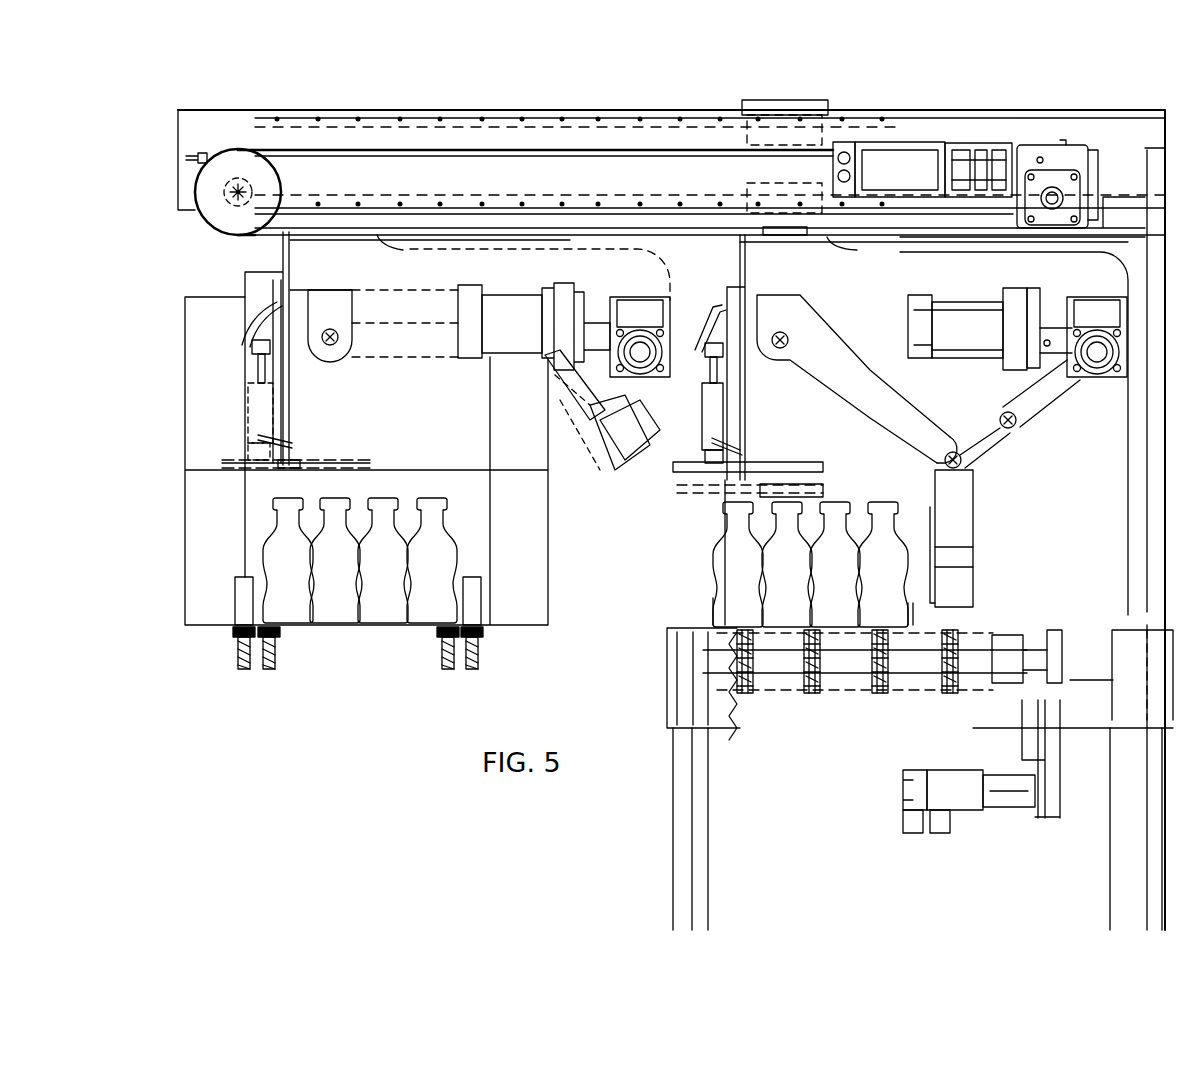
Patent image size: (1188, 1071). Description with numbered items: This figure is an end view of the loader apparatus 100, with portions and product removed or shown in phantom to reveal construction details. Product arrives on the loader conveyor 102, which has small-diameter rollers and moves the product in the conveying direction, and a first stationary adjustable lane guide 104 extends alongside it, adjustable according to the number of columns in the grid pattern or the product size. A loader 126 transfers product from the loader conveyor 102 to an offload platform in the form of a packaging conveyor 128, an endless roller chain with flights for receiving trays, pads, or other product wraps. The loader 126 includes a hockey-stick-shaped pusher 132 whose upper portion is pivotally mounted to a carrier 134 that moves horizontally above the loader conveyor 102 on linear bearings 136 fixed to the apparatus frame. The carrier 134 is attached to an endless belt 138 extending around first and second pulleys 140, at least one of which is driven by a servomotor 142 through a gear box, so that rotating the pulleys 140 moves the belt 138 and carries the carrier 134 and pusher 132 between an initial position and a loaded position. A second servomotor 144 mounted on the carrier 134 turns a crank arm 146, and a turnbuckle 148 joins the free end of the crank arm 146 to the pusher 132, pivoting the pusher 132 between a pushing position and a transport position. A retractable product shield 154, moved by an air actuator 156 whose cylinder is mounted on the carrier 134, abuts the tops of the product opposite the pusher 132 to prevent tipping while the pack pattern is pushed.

The loader apparatus 100 is at (840, 752).
The loader conveyor 102 is at (812, 693).
The first stationary adjustable lane guide 104 is at (908, 643).
The loader 126 is at (468, 102).
The packaging conveyor 128 is at (277, 650).
The pusher 132 is at (600, 460).
The carrier 134 is at (855, 297).
The linear bearings 136 is at (747, 130).
The endless belt 138 is at (262, 150).
The pulleys 140 is at (198, 213).
The servomotor 142 is at (908, 177).
The servomotor 144 is at (510, 330).
The crank arm 146 is at (1017, 395).
The turnbuckle 148 is at (998, 433).
The product shield 154 is at (273, 470).
The air actuator 156 is at (245, 420).